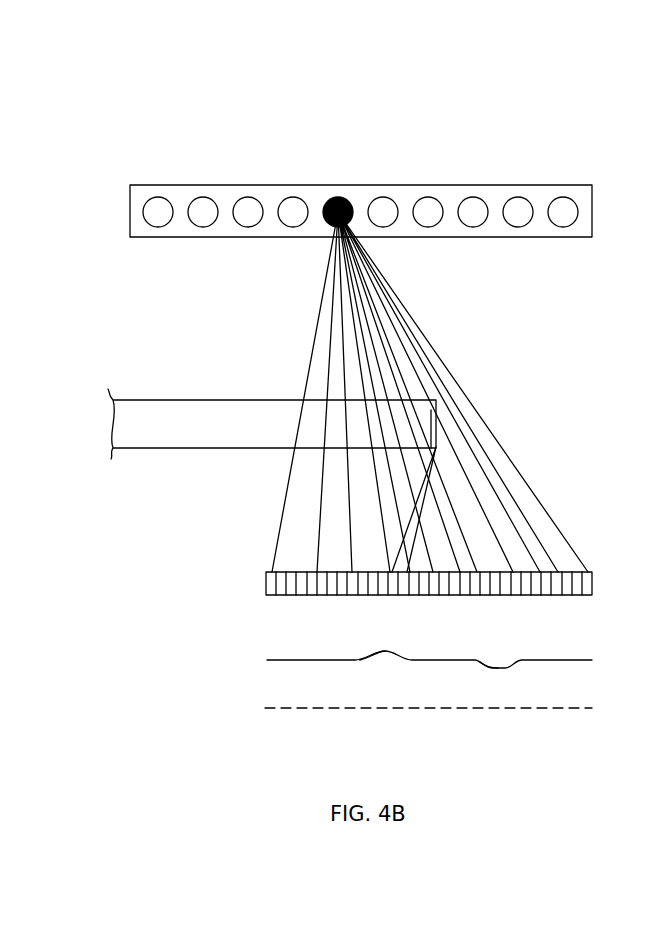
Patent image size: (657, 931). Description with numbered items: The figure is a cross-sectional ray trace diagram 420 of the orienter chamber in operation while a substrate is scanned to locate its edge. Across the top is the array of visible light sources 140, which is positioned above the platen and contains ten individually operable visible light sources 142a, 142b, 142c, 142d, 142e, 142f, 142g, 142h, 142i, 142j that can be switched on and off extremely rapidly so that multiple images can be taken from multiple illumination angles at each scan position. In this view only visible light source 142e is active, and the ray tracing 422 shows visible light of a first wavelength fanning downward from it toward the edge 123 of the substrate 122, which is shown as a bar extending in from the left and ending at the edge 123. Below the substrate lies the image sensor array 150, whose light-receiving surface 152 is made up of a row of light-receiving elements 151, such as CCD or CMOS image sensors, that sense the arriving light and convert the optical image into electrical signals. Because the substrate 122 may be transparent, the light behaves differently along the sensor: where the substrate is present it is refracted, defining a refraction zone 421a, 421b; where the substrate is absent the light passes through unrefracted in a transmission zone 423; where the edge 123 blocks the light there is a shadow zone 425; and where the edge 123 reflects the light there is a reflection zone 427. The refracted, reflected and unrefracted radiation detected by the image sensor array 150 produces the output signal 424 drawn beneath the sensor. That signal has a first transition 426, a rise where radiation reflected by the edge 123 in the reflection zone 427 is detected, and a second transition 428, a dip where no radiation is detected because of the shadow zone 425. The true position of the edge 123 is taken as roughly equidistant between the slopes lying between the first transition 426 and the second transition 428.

The ray trace diagram 420 is at (106, 97).
The array of visible light sources 140 is at (162, 175).
The visible light source 142a is at (149, 238).
The visible light source 142b is at (195, 237).
The visible light source 142c is at (252, 197).
The visible light source 142d is at (293, 197).
The visible light source 142e is at (323, 230).
The visible light source 142f is at (381, 197).
The visible light source 142g is at (430, 197).
The visible light source 142h is at (473, 197).
The visible light source 142i is at (512, 238).
The visible light source 142j is at (553, 237).
The ray tracing 422 is at (312, 335).
The substrate 122 is at (188, 400).
The edge of the substrate 123 is at (437, 425).
The image sensor array 150 is at (262, 566).
The light-receiving elements 151 is at (592, 605).
The light-receiving surface 152 is at (590, 605).
The refraction zone 421a is at (353, 605).
The reflection zone 427 is at (420, 605).
The refraction zone 421b is at (473, 605).
The shadow zone 425 is at (518, 605).
The transmission zone 423 is at (592, 605).
The output signal 424 is at (270, 657).
The first transition 426 is at (388, 653).
The second transition 428 is at (503, 668).